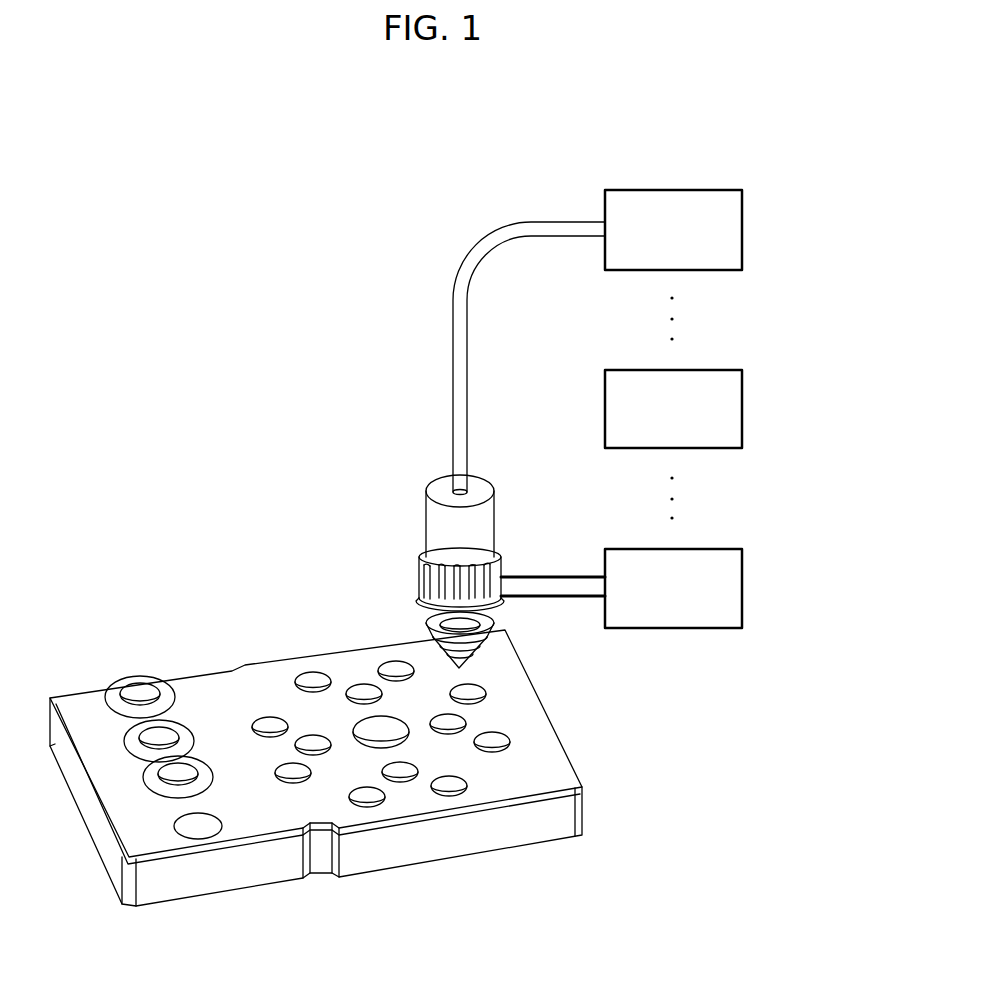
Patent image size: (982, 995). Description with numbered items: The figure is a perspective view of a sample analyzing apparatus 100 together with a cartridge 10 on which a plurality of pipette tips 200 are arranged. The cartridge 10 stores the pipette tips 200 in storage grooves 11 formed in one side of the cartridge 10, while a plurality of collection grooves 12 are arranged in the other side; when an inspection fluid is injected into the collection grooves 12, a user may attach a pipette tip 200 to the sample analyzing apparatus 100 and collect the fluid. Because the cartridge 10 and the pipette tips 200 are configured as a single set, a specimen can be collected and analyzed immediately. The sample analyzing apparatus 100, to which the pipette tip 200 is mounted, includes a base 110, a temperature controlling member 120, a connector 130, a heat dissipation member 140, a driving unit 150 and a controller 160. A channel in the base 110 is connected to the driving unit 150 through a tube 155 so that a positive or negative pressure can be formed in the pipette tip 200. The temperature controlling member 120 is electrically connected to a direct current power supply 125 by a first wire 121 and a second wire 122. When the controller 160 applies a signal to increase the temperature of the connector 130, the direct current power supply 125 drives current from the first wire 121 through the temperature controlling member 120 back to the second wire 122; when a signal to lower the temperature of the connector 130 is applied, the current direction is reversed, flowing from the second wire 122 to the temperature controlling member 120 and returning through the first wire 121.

The cartridge 10 is at (243, 872).
The storage groove 11 is at (180, 840).
The collection groove 12 is at (366, 807).
The sample analyzing apparatus 100 is at (430, 237).
The base 110 is at (438, 517).
The temperature controlling member 120 is at (427, 605).
The first wire 121 is at (533, 576).
The second wire 122 is at (570, 595).
The direct current power supply 125 is at (742, 590).
The connector 130 is at (497, 622).
The heat dissipation member 140 is at (420, 568).
The driving unit 150 is at (742, 230).
The tube 155 is at (533, 222).
The controller 160 is at (742, 410).
The pipette tip 200 is at (146, 676).